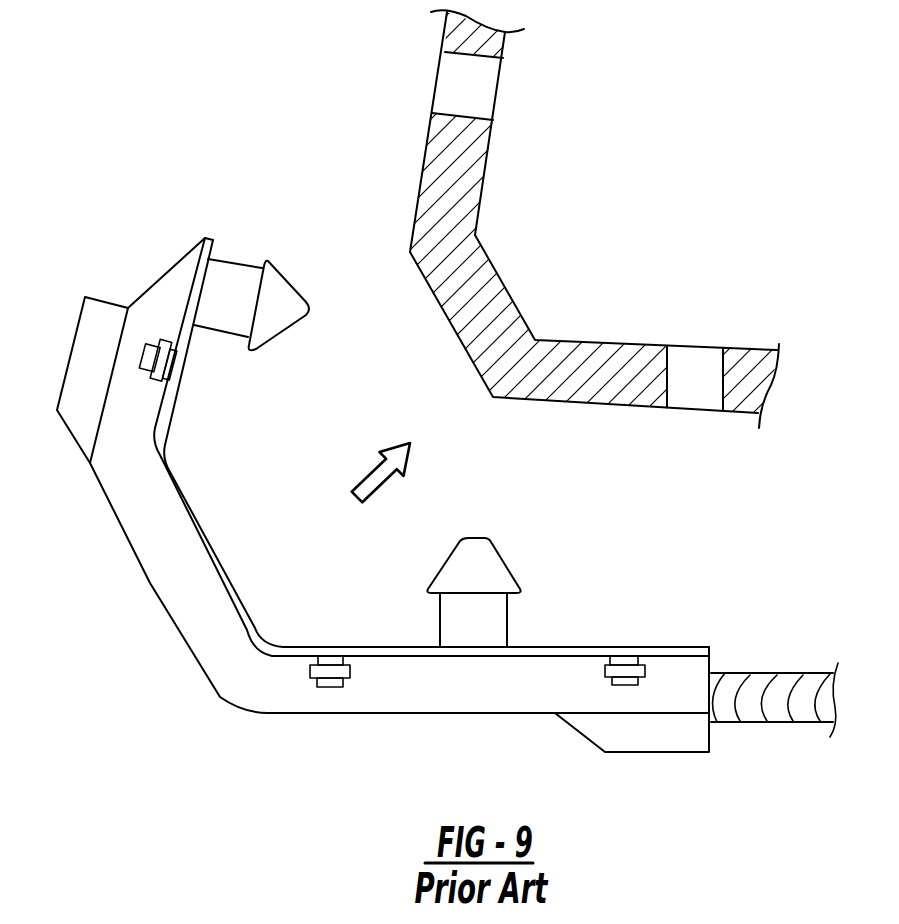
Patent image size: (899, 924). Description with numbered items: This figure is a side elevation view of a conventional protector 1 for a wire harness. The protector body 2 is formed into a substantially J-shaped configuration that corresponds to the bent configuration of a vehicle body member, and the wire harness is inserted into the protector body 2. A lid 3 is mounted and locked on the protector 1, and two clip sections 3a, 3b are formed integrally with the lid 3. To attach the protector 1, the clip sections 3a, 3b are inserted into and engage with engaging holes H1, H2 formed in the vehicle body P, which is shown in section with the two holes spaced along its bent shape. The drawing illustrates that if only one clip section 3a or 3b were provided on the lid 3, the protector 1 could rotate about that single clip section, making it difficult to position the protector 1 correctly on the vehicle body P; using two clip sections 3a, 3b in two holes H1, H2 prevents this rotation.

The protector 1 is at (383, 523).
The protector body 2 is at (475, 690).
The lid 3 is at (622, 645).
The clip section 3a is at (281, 342).
The clip section 3b is at (503, 558).
The vehicle body P is at (462, 193).
The engaging hole H1 is at (482, 85).
The engaging hole H2 is at (708, 378).